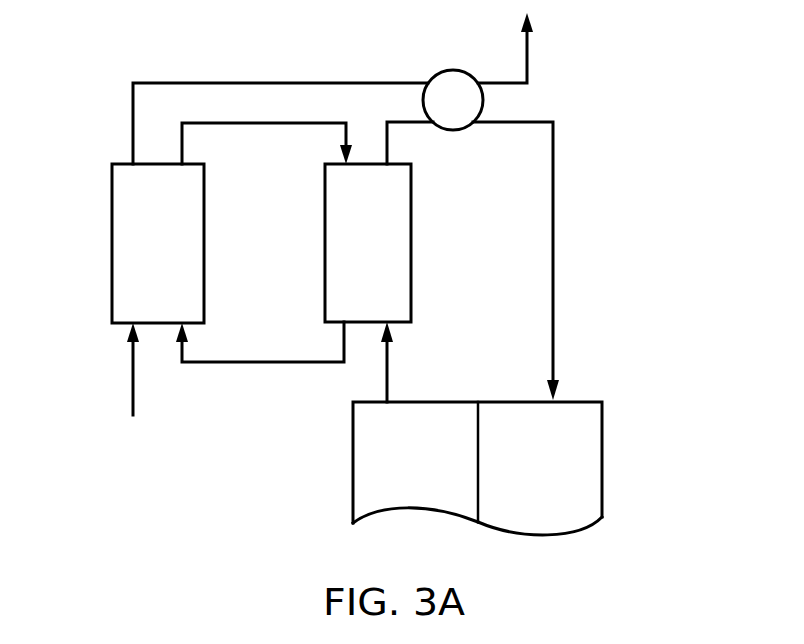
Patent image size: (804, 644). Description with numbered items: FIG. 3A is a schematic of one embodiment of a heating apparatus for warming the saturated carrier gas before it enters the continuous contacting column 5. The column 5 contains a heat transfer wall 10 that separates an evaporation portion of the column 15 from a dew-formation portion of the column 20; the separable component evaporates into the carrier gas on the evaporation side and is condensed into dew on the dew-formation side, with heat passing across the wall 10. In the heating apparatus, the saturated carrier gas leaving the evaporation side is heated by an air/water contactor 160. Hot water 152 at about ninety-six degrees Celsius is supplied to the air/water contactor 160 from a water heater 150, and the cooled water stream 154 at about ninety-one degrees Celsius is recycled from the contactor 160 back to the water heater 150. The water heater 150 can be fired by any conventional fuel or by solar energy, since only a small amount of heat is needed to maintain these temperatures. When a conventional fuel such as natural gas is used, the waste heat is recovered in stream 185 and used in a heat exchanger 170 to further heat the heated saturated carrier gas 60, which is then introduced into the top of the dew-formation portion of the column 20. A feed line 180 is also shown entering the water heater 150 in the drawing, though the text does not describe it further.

The continuous contacting column 5 is at (533, 491).
The heat transfer wall 10 is at (478, 490).
The evaporation portion of the column 15 is at (430, 473).
The dew-formation portion of the column 20 is at (548, 473).
The heated saturated carrier gas 60 is at (552, 272).
The water heater 150 is at (184, 259).
The hot water 152 is at (247, 125).
The cooled water stream 154 is at (273, 358).
The air/water contactor 160 is at (396, 259).
The heat exchanger 170 is at (448, 60).
The feed inlet line 180 is at (130, 383).
The waste heat recovery stream 185 is at (197, 85).